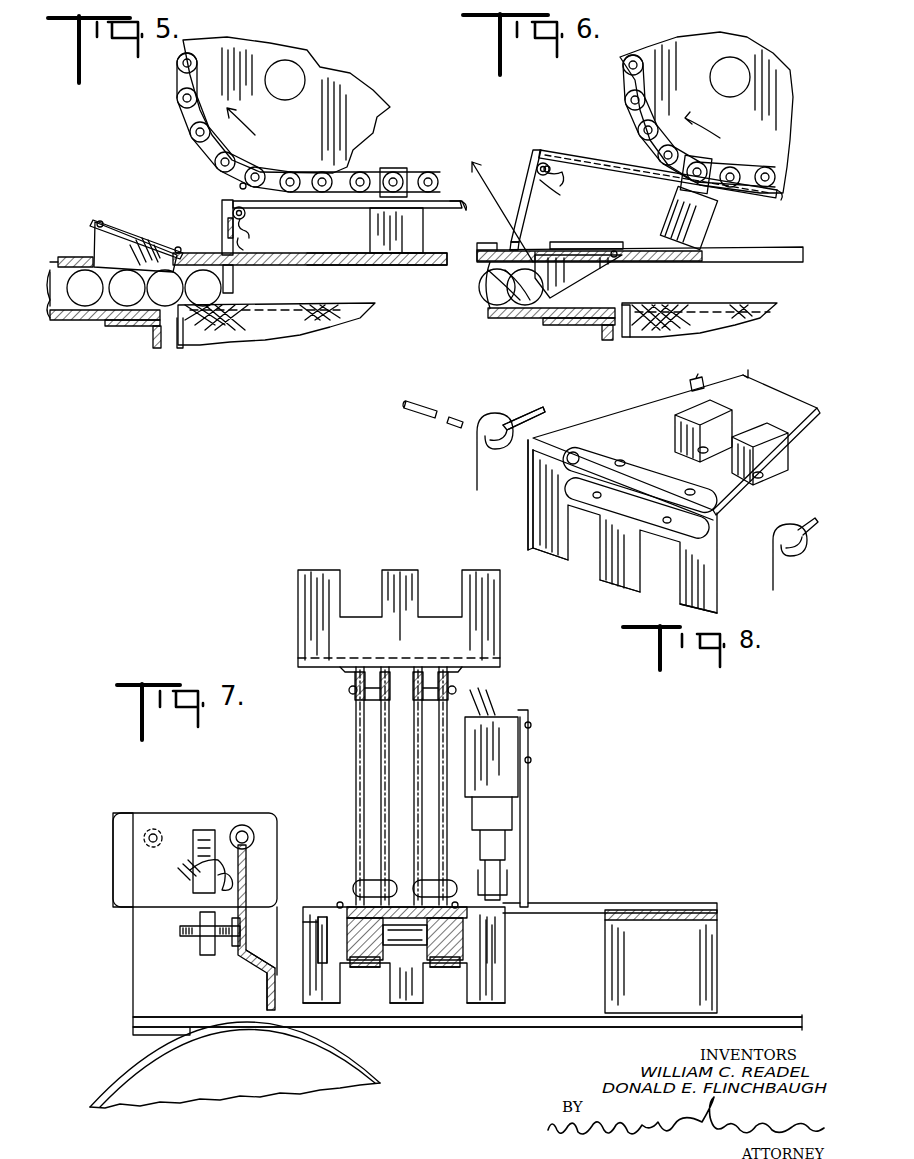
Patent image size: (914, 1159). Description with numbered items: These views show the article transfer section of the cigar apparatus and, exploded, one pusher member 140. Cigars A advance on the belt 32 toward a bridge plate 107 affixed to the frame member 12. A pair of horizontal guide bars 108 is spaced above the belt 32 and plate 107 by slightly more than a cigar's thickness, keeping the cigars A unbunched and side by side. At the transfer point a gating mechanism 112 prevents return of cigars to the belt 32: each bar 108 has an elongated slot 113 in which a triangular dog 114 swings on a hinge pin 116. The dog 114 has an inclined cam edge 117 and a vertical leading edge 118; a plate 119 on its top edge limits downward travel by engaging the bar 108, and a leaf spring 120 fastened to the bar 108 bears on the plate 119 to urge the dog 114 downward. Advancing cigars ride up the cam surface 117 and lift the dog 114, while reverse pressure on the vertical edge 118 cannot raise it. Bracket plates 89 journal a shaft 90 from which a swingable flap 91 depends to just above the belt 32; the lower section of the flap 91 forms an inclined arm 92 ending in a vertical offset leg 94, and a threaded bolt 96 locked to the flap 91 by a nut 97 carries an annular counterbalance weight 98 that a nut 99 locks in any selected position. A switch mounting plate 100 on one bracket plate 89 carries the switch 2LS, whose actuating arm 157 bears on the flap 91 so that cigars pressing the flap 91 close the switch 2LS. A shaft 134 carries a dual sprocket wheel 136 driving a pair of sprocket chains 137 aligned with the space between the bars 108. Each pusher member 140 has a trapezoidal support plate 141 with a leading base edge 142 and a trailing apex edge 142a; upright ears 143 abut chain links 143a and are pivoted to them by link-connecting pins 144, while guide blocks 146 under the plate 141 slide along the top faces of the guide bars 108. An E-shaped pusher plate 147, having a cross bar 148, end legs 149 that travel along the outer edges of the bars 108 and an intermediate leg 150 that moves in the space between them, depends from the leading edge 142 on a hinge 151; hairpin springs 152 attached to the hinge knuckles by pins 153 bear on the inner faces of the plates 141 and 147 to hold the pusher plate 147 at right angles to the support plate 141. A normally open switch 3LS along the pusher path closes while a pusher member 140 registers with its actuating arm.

In FIG. 5, the frame member 12 is at (152, 340).
In FIG. 5, the belt 32 is at (210, 335).
In FIG. 6, the belt 32 is at (726, 308).
In FIG. 7, the belt 32 is at (565, 1028).
In FIG. 7, the bracket plates 89 is at (133, 928).
In FIG. 7, the shaft 90 is at (248, 826).
In FIG. 7, the swingable flap 91 is at (262, 858).
In FIG. 7, the inclined arm 92 is at (252, 963).
In FIG. 7, the vertical offset leg 94 is at (266, 993).
In FIG. 7, the threaded bolt 96 is at (230, 945).
In FIG. 7, the nut 97 is at (312, 910).
In FIG. 7, the counterbalance weight 98 is at (198, 916).
In FIG. 7, the nut 99 is at (198, 941).
In FIG. 7, the switch mounting plate 100 is at (175, 816).
In FIG. 7, the second switch 2LS is at (208, 828).
In FIG. 7, the switch 3LS is at (505, 762).
In FIG. 5, the bridge plate 107 is at (68, 322).
In FIG. 6, the bridge plate 107 is at (490, 320).
In FIG. 5, the guide bars 108 is at (436, 251).
In FIG. 6, the guide bars 108 is at (790, 230).
In FIG. 7, the guide bars 108 is at (358, 968).
In FIG. 5, the gating mechanism 112 is at (128, 174).
In FIG. 5, the elongated slot 113 is at (90, 258).
In FIG. 6, the elongated slot 113 is at (488, 287).
In FIG. 5, the gate defining dog 114 is at (118, 240).
In FIG. 6, the gate defining dog 114 is at (577, 272).
In FIG. 5, the hinge pin 116 is at (182, 215).
In FIG. 6, the hinge pin 116 is at (613, 250).
In FIG. 5, the inclined edge 117 is at (108, 327).
In FIG. 6, the inclined edge 117 is at (616, 262).
In FIG. 5, the vertical edge 118 is at (85, 246).
In FIG. 6, the vertical edge 118 is at (490, 296).
In FIG. 5, the plate 119 is at (98, 218).
In FIG. 6, the plate 119 is at (530, 262).
In FIG. 6, the leaf spring 120 is at (572, 243).
In FIG. 5, the longitudinal shaft 134 is at (292, 70).
In FIG. 6, the longitudinal shaft 134 is at (740, 68).
In FIG. 5, the dual sprocket wheel 136 is at (345, 88).
In FIG. 6, the dual sprocket wheel 136 is at (785, 82).
In FIG. 5, the sprocket chains 137 is at (336, 122).
In FIG. 6, the sprocket chains 137 is at (777, 176).
In FIG. 5, the pusher member 140 is at (215, 245).
In FIG. 6, the pusher member 140 is at (606, 161).
In FIG. 8, the pusher member 140 is at (606, 398).
In FIG. 7, the pusher member 140 is at (289, 611).
In FIG. 5, the support plate 141 is at (332, 206).
In FIG. 6, the support plate 141 is at (636, 176).
In FIG. 8, the support plate 141 is at (760, 400).
In FIG. 7, the support plate 141 is at (530, 903).
In FIG. 5, the leading base edge 142 is at (232, 208).
In FIG. 6, the leading base edge 142 is at (543, 162).
In FIG. 8, the leading base edge 142 is at (546, 428).
In FIG. 5, the trailing apex edge 142a is at (466, 212).
In FIG. 6, the trailing apex edge 142a is at (783, 198).
In FIG. 8, the trailing apex edge 142a is at (745, 373).
In FIG. 5, the upright ears 143 is at (386, 166).
In FIG. 6, the upright ears 143 is at (712, 160).
In FIG. 8, the upright ears 143 is at (694, 378).
In FIG. 7, the upright ears 143 is at (354, 684).
In FIG. 5, the links 143a is at (432, 172).
In FIG. 6, the links 143a is at (740, 170).
In FIG. 7, the links 143a is at (354, 700).
In FIG. 5, the link-connecting pins 144 is at (398, 174).
In FIG. 6, the link-connecting pins 144 is at (700, 162).
In FIG. 7, the link-connecting pins 144 is at (356, 705).
In FIG. 5, the guide blocks 146 is at (372, 232).
In FIG. 6, the guide blocks 146 is at (712, 224).
In FIG. 8, the guide blocks 146 is at (680, 430).
In FIG. 7, the guide blocks 146 is at (428, 943).
In FIG. 5, the pusher plate 147 is at (243, 284).
In FIG. 6, the pusher plate 147 is at (522, 190).
In FIG. 8, the pusher plate 147 is at (522, 519).
In FIG. 8, the horizontal cross bar 148 is at (535, 482).
In FIG. 7, the horizontal cross bar 148 is at (388, 647).
In FIG. 8, the end legs 149 is at (666, 604).
In FIG. 7, the end legs 149 is at (318, 572).
In FIG. 8, the intermediate leg 150 is at (618, 586).
In FIG. 7, the intermediate leg 150 is at (398, 570).
In FIG. 5, the hinge 151 is at (245, 240).
In FIG. 6, the hinge 151 is at (560, 197).
In FIG. 8, the hinge 151 is at (628, 488).
In FIG. 5, the hairpin springs 152 is at (247, 225).
In FIG. 6, the hairpin springs 152 is at (562, 180).
In FIG. 8, the hairpin springs 152 is at (784, 568).
In FIG. 7, the hairpin springs 152 is at (318, 940).
In FIG. 5, the pins 153 is at (246, 183).
In FIG. 6, the pins 153 is at (550, 165).
In FIG. 8, the pins 153 is at (440, 410).
In FIG. 7, the pins 153 is at (338, 905).
In FIG. 7, the actuating arm 157 is at (198, 860).
In FIG. 5, the cigar A is at (128, 296).
In FIG. 6, the cigar A is at (515, 306).
In FIG. 7, the cigar A is at (512, 1008).